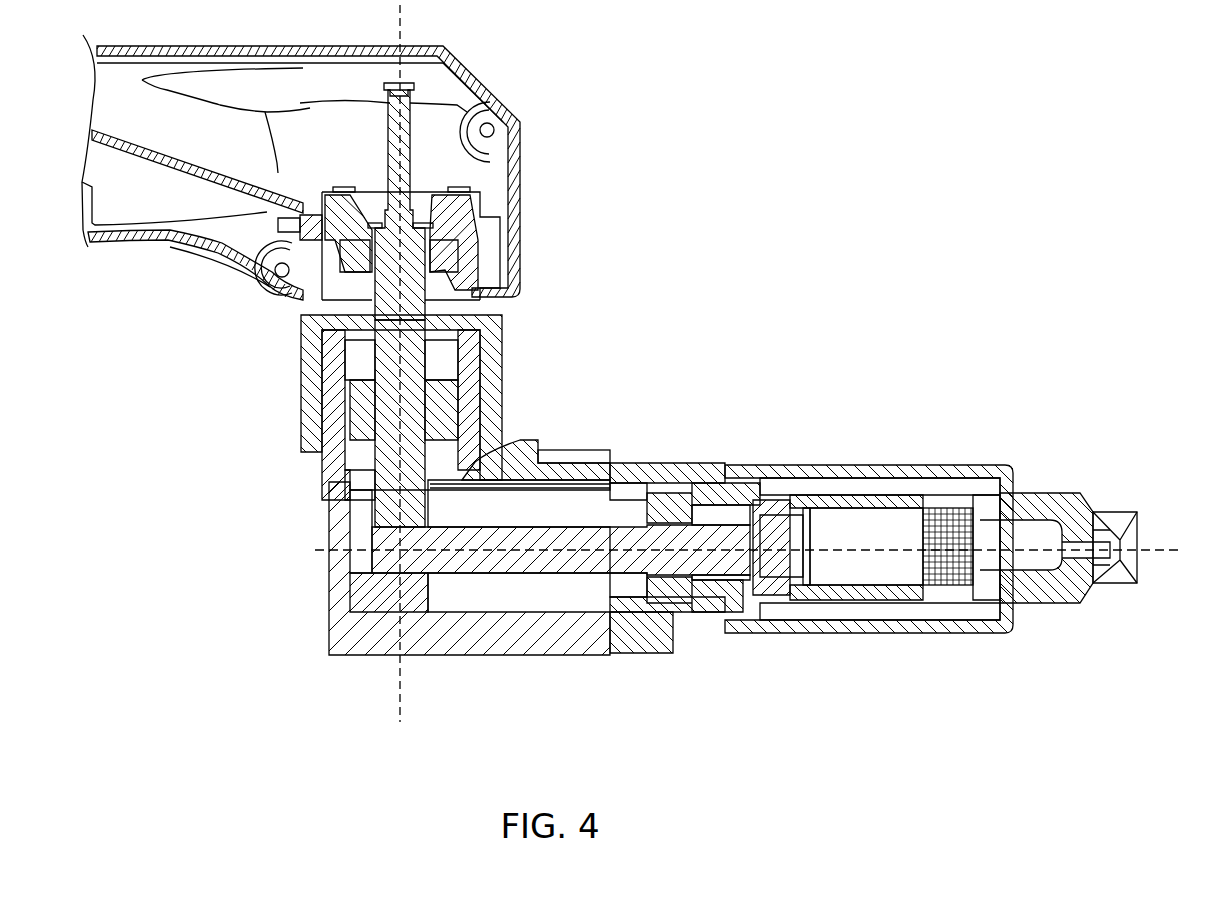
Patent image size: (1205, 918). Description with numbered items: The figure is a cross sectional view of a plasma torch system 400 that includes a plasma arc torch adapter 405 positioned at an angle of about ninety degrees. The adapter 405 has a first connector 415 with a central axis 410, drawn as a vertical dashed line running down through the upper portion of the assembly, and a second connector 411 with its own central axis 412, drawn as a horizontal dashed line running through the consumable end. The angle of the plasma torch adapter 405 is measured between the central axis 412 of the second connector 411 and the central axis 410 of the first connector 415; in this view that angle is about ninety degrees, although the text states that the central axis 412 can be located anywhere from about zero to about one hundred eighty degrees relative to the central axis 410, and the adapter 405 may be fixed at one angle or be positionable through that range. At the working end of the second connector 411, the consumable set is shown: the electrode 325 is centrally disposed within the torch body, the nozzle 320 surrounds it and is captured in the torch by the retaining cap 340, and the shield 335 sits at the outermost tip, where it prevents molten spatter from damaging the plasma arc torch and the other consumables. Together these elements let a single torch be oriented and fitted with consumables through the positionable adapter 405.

The plasma torch system 400 is at (899, 136).
The plasma arc torch adapter 405 is at (341, 670).
The central axis 410 is at (400, 710).
The second connector 411 is at (752, 472).
The central axis 412 is at (1168, 548).
The first connector 415 is at (322, 405).
The retaining cap 340 is at (892, 470).
The nozzle 320 is at (1080, 510).
The electrode 325 is at (1033, 530).
The shield 335 is at (1105, 582).